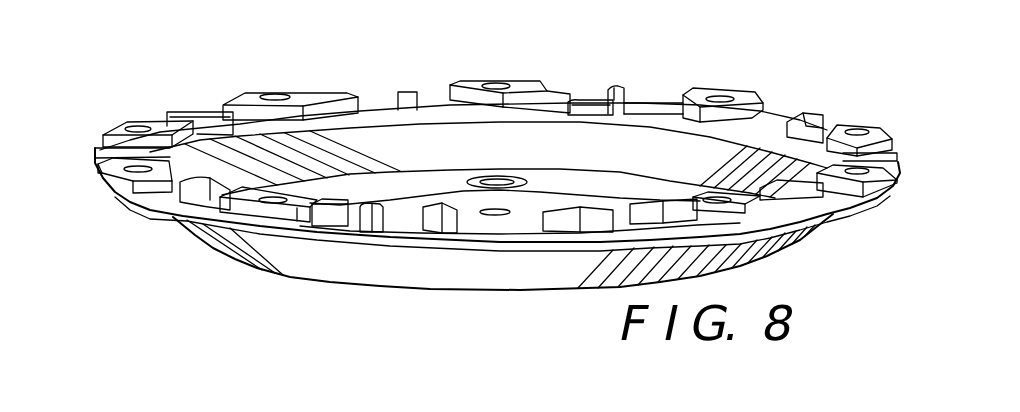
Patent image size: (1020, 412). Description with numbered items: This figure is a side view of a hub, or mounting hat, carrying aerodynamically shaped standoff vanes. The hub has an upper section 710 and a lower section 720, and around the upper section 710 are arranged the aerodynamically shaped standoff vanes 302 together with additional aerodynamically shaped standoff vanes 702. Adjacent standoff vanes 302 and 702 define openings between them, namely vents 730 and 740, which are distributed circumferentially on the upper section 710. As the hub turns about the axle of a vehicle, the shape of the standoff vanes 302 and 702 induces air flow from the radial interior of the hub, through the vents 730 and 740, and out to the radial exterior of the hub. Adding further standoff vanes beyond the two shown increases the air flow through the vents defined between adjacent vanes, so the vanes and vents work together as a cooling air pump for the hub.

The aerodynamically shaped standoff vane 302 is at (741, 97).
The additional aerodynamically shaped standoff vane 702 is at (390, 96).
The upper section 710 is at (186, 209).
The lower section 720 is at (406, 260).
The vent 730 is at (590, 98).
The vent 740 is at (660, 100).